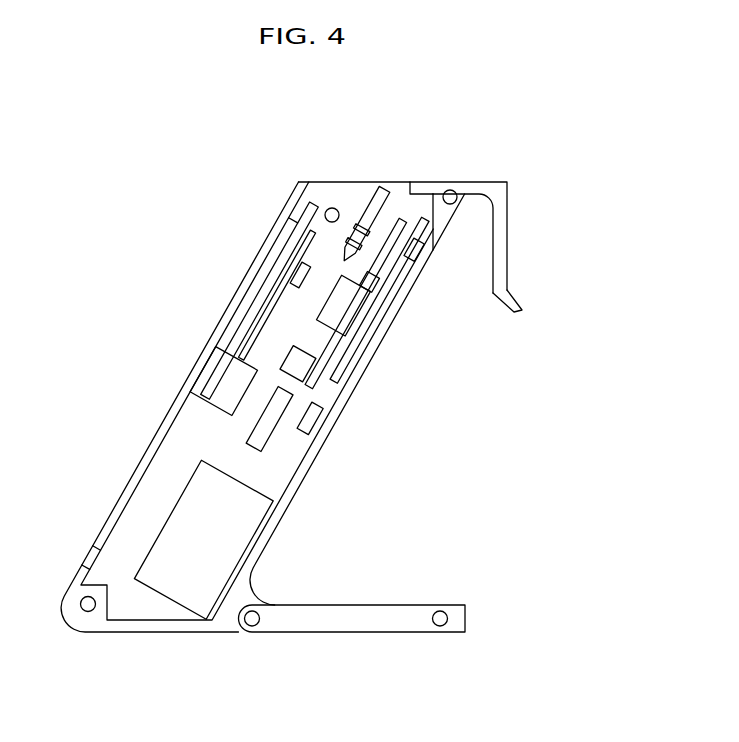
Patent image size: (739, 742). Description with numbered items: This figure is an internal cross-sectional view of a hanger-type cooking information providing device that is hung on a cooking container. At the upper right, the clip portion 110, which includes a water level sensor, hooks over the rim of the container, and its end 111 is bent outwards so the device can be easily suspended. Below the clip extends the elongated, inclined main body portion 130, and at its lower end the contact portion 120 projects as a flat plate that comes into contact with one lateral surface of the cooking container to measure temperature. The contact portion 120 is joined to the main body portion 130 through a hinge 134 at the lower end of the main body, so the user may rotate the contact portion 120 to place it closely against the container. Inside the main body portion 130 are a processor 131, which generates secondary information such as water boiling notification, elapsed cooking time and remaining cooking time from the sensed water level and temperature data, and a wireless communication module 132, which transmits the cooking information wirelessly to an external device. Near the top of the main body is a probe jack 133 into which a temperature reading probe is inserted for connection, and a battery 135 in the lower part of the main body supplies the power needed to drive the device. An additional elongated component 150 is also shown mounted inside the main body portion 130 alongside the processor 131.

The hanger bracket 110 is at (507, 224).
The hook 111 is at (520, 311).
The base plate 120 is at (458, 632).
The housing body 130 is at (213, 433).
The guide rail 131 is at (253, 333).
The circuit module 132 is at (338, 307).
The fastening screw 133 is at (380, 197).
The hinge pin 134 is at (257, 630).
The battery 135 is at (183, 542).
The sensor bar 150 is at (263, 295).